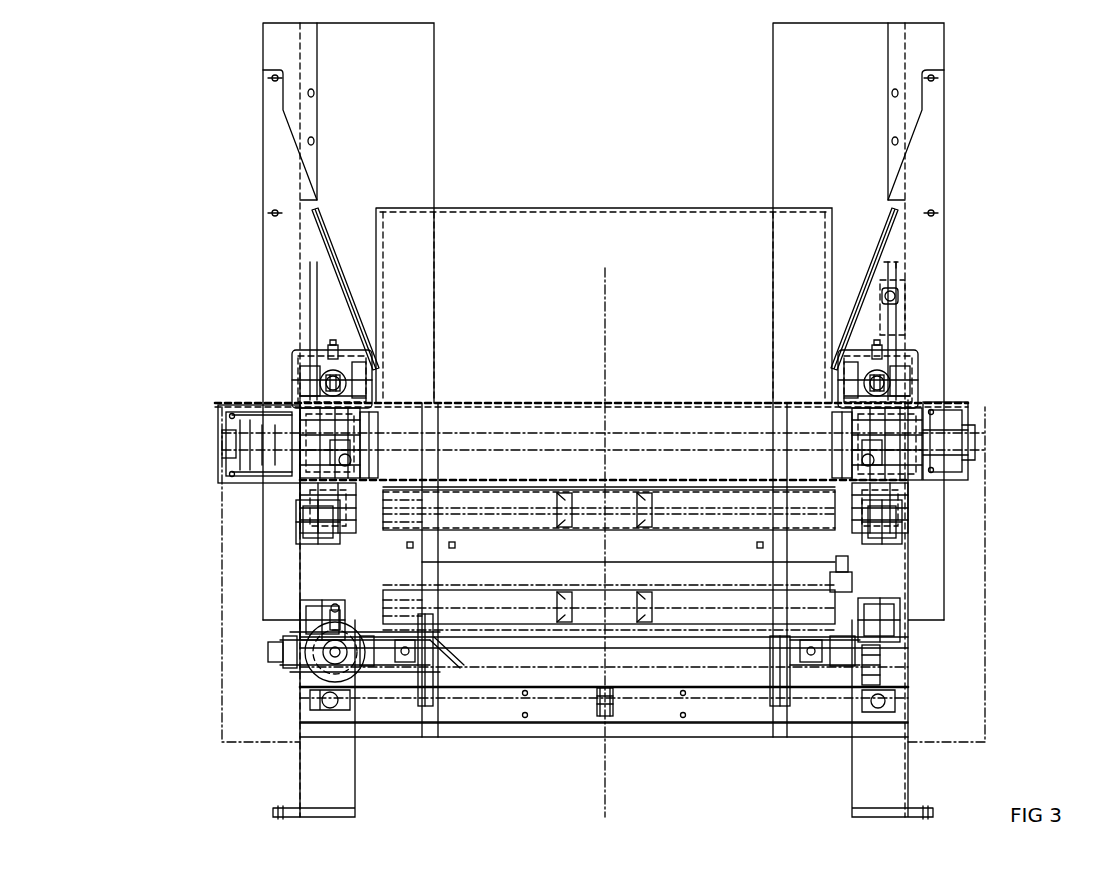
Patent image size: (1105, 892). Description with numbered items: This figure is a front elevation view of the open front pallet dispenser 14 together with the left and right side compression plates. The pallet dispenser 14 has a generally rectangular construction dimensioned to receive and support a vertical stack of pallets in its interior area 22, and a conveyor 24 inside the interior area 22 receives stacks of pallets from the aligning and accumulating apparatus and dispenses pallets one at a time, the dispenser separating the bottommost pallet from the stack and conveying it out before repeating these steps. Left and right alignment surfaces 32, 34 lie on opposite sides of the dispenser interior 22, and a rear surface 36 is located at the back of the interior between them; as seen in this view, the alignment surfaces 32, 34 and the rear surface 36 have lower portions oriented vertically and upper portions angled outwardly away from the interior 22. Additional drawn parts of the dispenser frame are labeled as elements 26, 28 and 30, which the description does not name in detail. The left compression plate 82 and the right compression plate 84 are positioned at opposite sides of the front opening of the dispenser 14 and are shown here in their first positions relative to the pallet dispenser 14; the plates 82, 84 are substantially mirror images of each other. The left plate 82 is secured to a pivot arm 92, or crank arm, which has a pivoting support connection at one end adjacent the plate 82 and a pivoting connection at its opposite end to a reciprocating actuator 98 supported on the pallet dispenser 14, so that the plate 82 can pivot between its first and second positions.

The open front pallet dispenser 14 is at (225, 308).
The interior area 22 is at (553, 262).
The conveyor 24 is at (432, 630).
The support bars 26 is at (845, 530).
The bearing blocks 28 is at (300, 520).
The clamp assemblies 30 is at (300, 488).
The left alignment surface 32 is at (377, 468).
The right alignment surface 34 is at (832, 470).
The rear surface 36 is at (680, 268).
The left compression plate 82 is at (345, 266).
The right compression plate 84 is at (868, 266).
The pivot arm 92 is at (316, 384).
The reciprocating actuator 98 is at (318, 388).